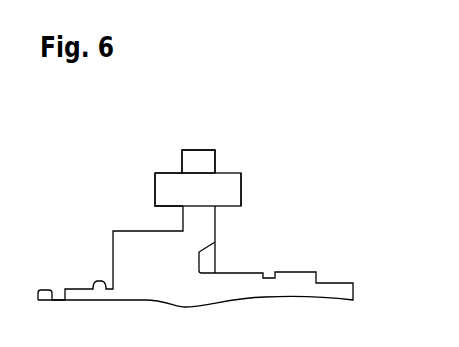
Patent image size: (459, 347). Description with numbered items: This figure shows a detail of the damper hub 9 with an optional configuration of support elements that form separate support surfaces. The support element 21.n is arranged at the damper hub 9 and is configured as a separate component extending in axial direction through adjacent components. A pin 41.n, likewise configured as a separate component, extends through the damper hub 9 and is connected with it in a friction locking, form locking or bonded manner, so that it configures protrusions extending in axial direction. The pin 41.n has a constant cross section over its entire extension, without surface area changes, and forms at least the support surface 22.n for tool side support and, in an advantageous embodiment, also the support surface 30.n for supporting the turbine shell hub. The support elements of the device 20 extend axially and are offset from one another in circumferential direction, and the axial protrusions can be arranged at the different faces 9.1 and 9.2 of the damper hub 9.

The damper hub 9 is at (137, 266).
The face of the damper hub 9.1 is at (181, 166).
The face of the damper hub 9.2 is at (215, 163).
The device 20 is at (172, 170).
The support element 21.n is at (172, 180).
The support surface 22.n is at (156, 185).
The pin 41.n is at (155, 196).
The support surface 30.n is at (241, 187).